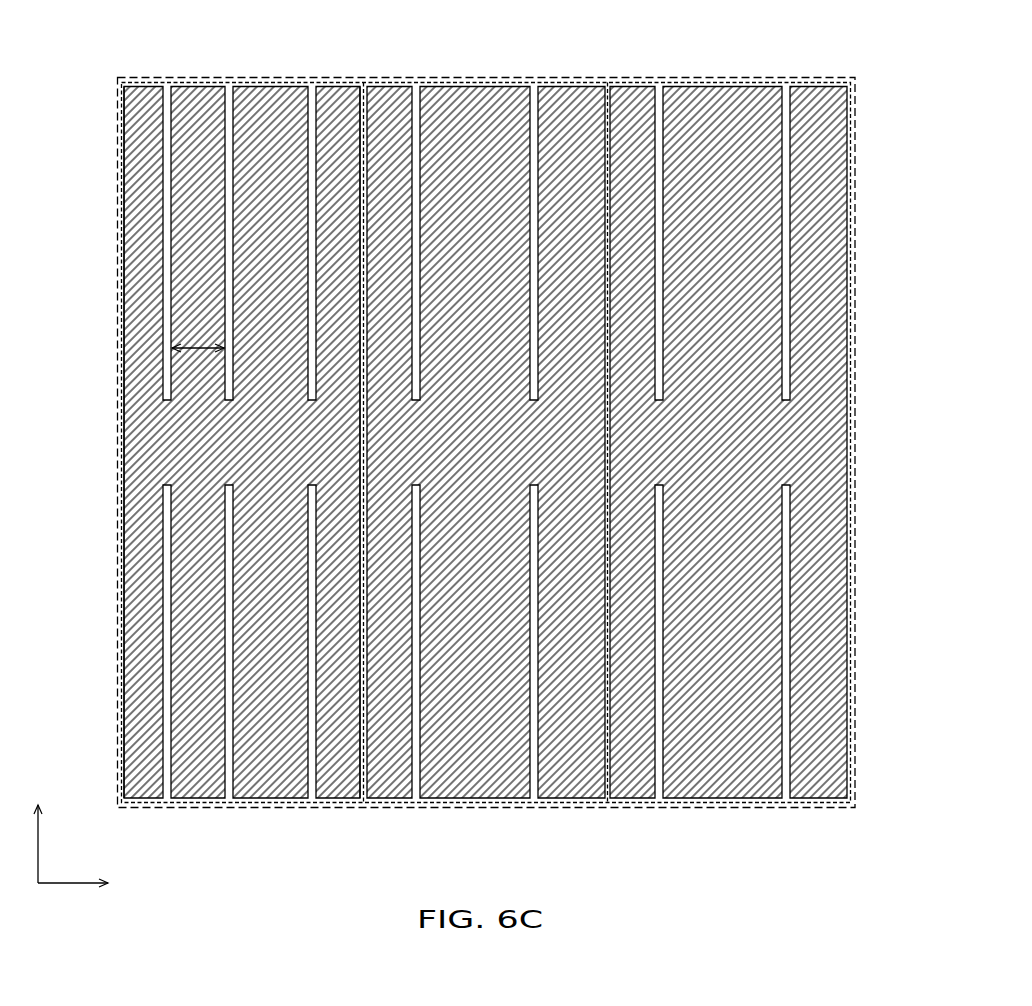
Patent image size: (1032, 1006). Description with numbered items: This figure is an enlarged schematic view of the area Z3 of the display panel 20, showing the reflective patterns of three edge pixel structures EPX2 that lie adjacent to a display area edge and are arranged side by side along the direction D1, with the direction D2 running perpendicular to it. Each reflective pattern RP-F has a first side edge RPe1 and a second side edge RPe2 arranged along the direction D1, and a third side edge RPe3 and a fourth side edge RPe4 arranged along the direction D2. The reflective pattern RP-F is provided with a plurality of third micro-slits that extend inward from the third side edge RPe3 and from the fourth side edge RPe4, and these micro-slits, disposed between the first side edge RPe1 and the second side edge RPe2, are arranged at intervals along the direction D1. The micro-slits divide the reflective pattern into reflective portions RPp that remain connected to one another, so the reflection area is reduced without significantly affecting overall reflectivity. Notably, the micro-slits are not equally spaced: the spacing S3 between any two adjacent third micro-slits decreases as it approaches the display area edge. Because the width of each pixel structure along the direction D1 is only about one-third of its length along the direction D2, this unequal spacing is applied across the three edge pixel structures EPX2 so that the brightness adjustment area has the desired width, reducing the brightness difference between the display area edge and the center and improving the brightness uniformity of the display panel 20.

The area Z3 is at (838, 77).
The reflective portions RPp is at (810, 766).
The edge pixel structures EPX2 is at (230, 78).
The reflective pattern RP-F is at (755, 100).
The first side edge RPe1 is at (123, 126).
The second side edge RPe2 is at (363, 127).
The third side edge RPe3 is at (189, 84).
The fourth side edge RPe4 is at (248, 801).
The spacing S3 is at (200, 350).
The display panel 20 is at (918, 867).
The direction D1 is at (94, 885).
The direction D2 is at (42, 830).